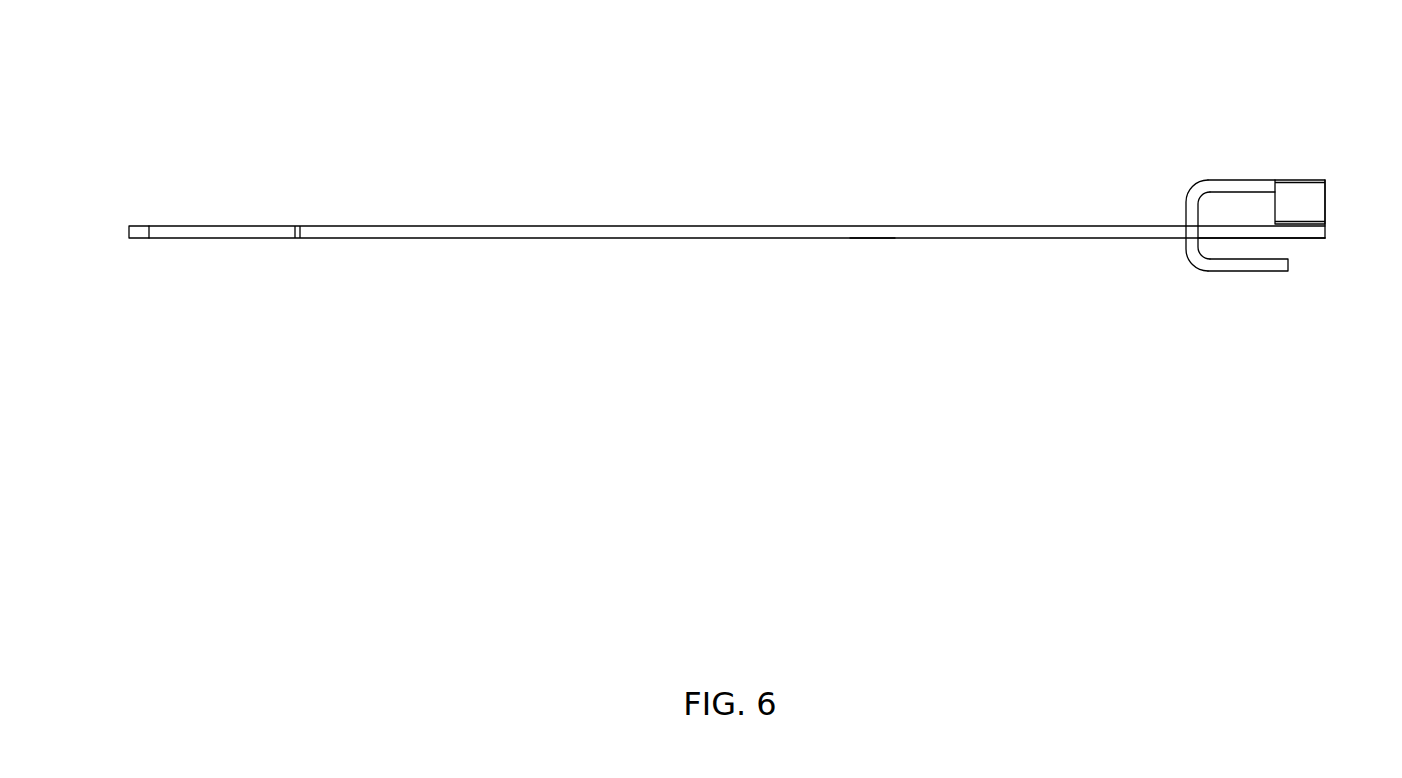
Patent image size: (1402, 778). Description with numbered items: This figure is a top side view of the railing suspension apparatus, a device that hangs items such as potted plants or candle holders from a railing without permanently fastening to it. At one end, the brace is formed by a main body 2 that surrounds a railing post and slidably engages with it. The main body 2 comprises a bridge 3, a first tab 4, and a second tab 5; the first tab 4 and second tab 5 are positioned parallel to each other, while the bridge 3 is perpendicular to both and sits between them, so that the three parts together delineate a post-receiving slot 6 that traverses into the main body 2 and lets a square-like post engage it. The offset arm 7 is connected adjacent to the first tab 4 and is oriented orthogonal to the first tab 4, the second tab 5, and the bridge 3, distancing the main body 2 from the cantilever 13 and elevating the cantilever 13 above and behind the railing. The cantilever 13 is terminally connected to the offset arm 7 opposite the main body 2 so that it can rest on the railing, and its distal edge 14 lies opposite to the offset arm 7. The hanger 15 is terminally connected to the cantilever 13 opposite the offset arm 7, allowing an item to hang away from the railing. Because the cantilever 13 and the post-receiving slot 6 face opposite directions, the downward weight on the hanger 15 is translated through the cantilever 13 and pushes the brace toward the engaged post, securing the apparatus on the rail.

The main body 2 is at (1330, 173).
The bridge 3 is at (1192, 212).
The first tab 4 is at (1258, 183).
The second tab 5 is at (1242, 263).
The post-receiving slot 6 is at (1282, 248).
The offset arm 7 is at (1330, 203).
The cantilever 13 is at (530, 210).
The distal edge 14 is at (872, 230).
The hanger 15 is at (217, 213).